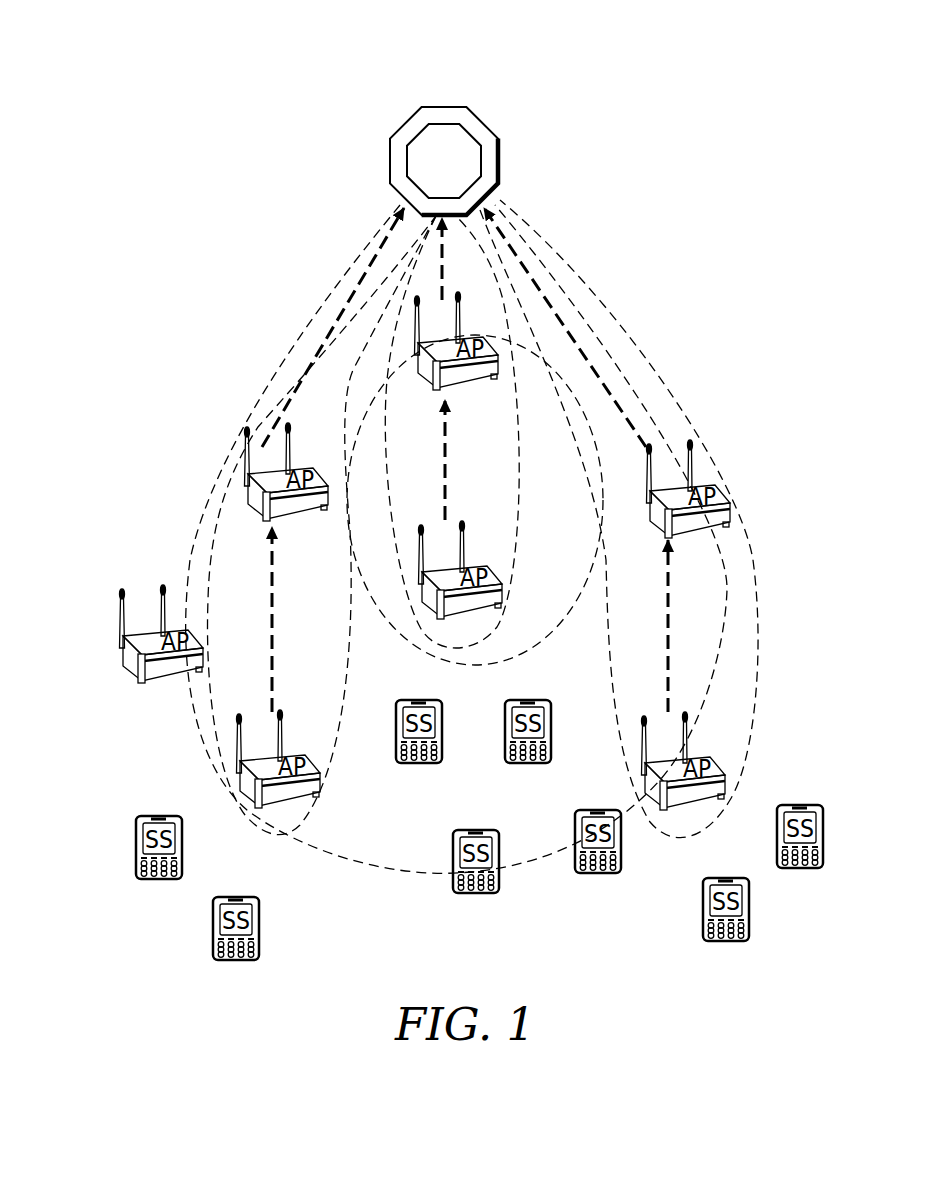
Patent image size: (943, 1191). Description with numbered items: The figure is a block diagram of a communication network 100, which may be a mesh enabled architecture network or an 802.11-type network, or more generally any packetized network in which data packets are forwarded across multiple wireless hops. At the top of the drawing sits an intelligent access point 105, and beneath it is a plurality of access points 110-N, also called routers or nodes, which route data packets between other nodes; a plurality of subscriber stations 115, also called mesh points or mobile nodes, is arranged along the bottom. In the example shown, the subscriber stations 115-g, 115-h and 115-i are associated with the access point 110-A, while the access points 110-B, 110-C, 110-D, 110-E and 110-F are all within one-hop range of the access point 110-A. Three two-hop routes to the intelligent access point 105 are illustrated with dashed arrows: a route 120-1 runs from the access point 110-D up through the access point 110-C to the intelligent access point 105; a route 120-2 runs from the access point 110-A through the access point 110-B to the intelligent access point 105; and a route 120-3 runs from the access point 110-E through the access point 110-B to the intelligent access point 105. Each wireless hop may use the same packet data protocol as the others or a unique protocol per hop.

The communication network 100 is at (126, 30).
The intelligent access point 105 is at (467, 168).
The access point A 110-A is at (500, 600).
The access point B 110-B is at (487, 385).
The access point C 110-C is at (245, 494).
The access point D 110-D is at (325, 789).
The access point E 110-E is at (730, 778).
The access point F 110-F is at (735, 510).
The access point 110-N is at (122, 645).
The subscriber station 115 is at (135, 865).
The subscriber station g 115-g is at (407, 698).
The subscriber station h 115-h is at (526, 698).
The subscriber station i 115-i is at (473, 827).
The route 120-1 is at (319, 296).
The route 120-2 is at (508, 581).
The route 120-3 is at (655, 381).